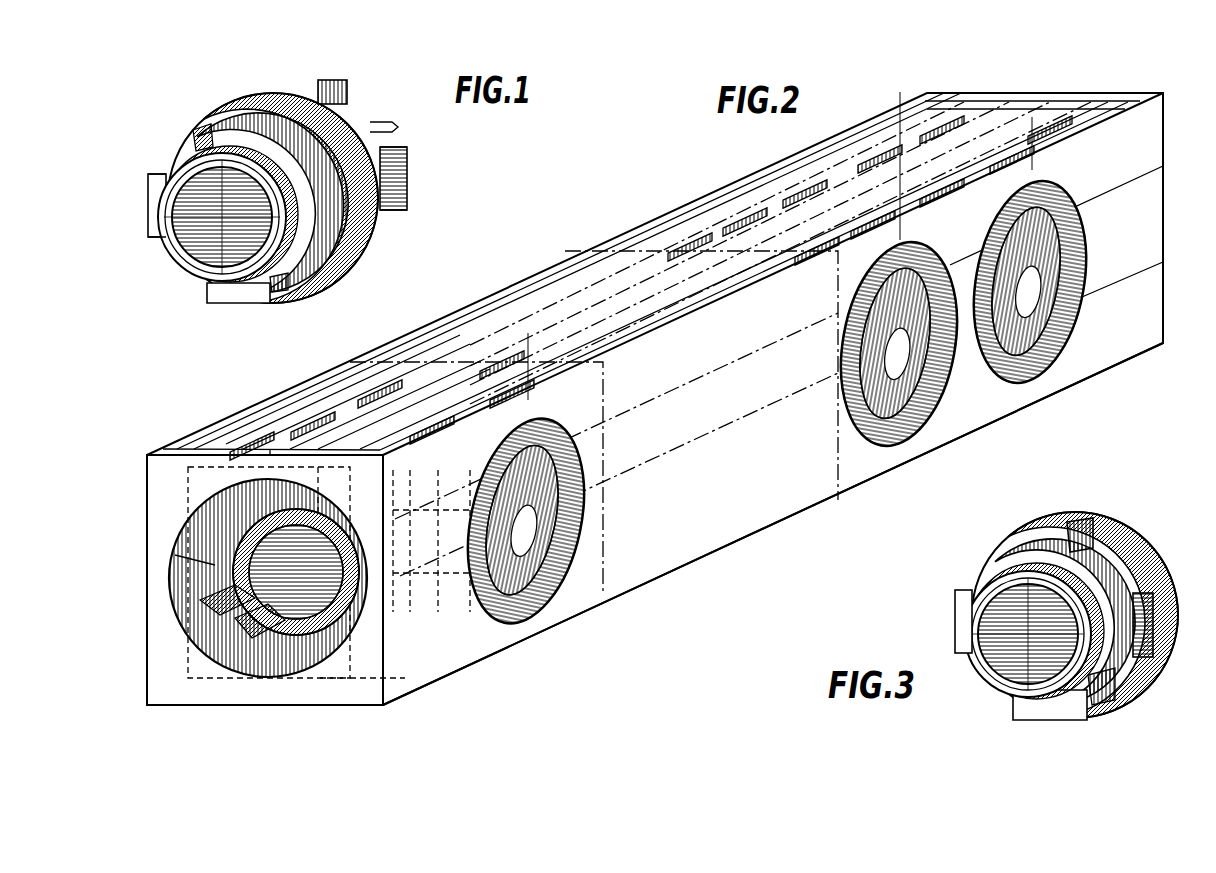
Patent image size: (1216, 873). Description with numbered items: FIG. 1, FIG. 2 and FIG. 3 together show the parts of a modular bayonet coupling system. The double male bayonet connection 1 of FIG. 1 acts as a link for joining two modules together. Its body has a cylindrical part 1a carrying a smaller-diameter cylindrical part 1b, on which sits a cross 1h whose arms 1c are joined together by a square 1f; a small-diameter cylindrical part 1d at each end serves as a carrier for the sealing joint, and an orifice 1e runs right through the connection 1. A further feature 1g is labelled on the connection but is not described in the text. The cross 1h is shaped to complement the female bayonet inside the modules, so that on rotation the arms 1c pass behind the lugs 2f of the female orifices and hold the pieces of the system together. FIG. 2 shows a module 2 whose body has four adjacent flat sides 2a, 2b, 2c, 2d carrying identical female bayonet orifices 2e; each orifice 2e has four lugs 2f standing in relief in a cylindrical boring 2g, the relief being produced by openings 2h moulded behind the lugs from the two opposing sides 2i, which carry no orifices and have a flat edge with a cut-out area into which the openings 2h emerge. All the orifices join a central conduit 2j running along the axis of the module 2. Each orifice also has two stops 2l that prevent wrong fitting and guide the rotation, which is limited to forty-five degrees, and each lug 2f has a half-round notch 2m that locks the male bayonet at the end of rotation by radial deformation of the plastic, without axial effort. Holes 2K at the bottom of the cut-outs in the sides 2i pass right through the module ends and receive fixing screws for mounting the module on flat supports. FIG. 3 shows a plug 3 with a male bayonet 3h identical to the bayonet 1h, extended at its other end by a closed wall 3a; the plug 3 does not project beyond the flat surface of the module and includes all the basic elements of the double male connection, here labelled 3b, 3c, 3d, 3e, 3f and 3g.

In FIG. 1, the double male bayonet connection 1 is at (368, 228).
In FIG. 1, the cylindrical part 1a is at (343, 262).
In FIG. 1, the smaller cylindrical part 1b is at (392, 127).
In FIG. 1, the arms 1c is at (230, 105).
In FIG. 1, the small diameter cylindrical part 1d is at (295, 280).
In FIG. 1, the orifice 1e is at (195, 250).
In FIG. 1, the square 1f is at (205, 135).
In FIG. 1, the notch 1g is at (265, 90).
In FIG. 1, the cross 1h is at (165, 176).
In FIG. 2, the module 2 is at (470, 700).
In FIG. 2, the flat side 2a is at (585, 615).
In FIG. 2, the flat side 2b is at (360, 690).
In FIG. 2, the flat side 2c is at (147, 665).
In FIG. 2, the flat side 2d is at (1163, 274).
In FIG. 2, the female bayonet orifice 2e is at (300, 660).
In FIG. 2, the lug 2f is at (200, 505).
In FIG. 2, the cylindrical boring 2g is at (260, 680).
In FIG. 2, the opening 2h is at (900, 240).
In FIG. 2, the side 2i is at (1110, 97).
In FIG. 2, the central conduit 2j is at (215, 565).
In FIG. 2, the hole 2K is at (250, 440).
In FIG. 2, the stop 2l is at (1055, 147).
In FIG. 2, the half-round notch 2m is at (215, 535).
In FIG. 3, the plug 3 is at (1112, 700).
In FIG. 3, the wall 3a is at (1173, 633).
In FIG. 3, the side lug 3b is at (1145, 548).
In FIG. 3, the bottom lug 3c is at (1047, 703).
In FIG. 3, the lug seat 3d is at (1067, 707).
In FIG. 3, the bore of second collar 3e is at (1003, 690).
In FIG. 3, the annular shoulder 3f is at (1000, 557).
In FIG. 3, the notch 3g is at (1080, 520).
In FIG. 3, the male bayonet 3h is at (967, 590).